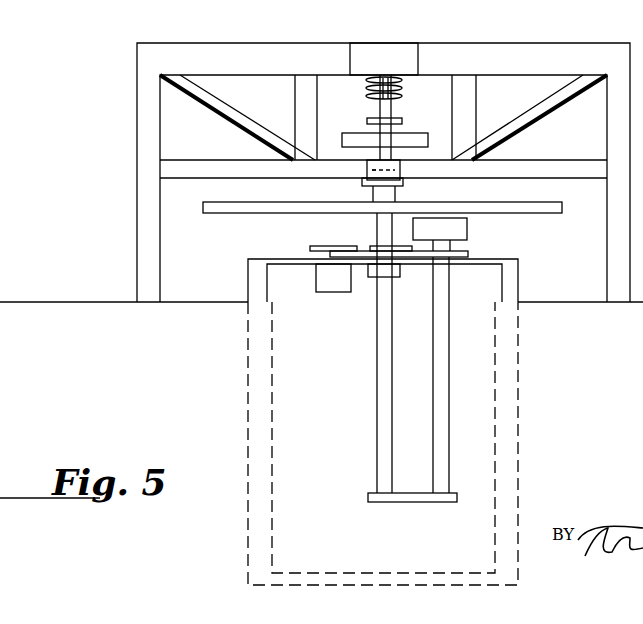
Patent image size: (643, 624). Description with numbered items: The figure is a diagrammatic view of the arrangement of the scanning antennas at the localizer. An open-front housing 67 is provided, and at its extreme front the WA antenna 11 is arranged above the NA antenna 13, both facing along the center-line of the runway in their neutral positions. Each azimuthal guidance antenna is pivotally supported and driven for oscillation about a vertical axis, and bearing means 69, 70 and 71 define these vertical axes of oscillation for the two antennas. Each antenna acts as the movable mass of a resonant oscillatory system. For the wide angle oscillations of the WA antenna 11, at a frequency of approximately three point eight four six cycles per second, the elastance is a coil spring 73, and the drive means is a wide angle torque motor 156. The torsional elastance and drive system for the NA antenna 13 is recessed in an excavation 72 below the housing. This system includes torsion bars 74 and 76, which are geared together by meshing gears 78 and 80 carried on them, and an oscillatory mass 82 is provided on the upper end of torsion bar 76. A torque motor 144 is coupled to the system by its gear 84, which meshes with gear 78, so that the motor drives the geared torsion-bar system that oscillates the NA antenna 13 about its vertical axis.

The open-front housing 67 is at (152, 145).
The WA antenna 11 is at (350, 137).
The wide angle torque motor 156 is at (388, 92).
The coil spring 73 is at (407, 88).
The bearing means 69 is at (376, 161).
The bearing means 70 is at (397, 189).
The NA antenna 13 is at (548, 211).
The oscillatory mass 82 is at (458, 225).
The gear 80 is at (470, 252).
The gear 84 is at (318, 247).
The gear 78 is at (366, 250).
The bearing means 71 is at (395, 270).
The torque motor 144 is at (328, 283).
The excavation 72 is at (338, 378).
The torsion bar 74 is at (380, 409).
The torsion bar 76 is at (442, 420).